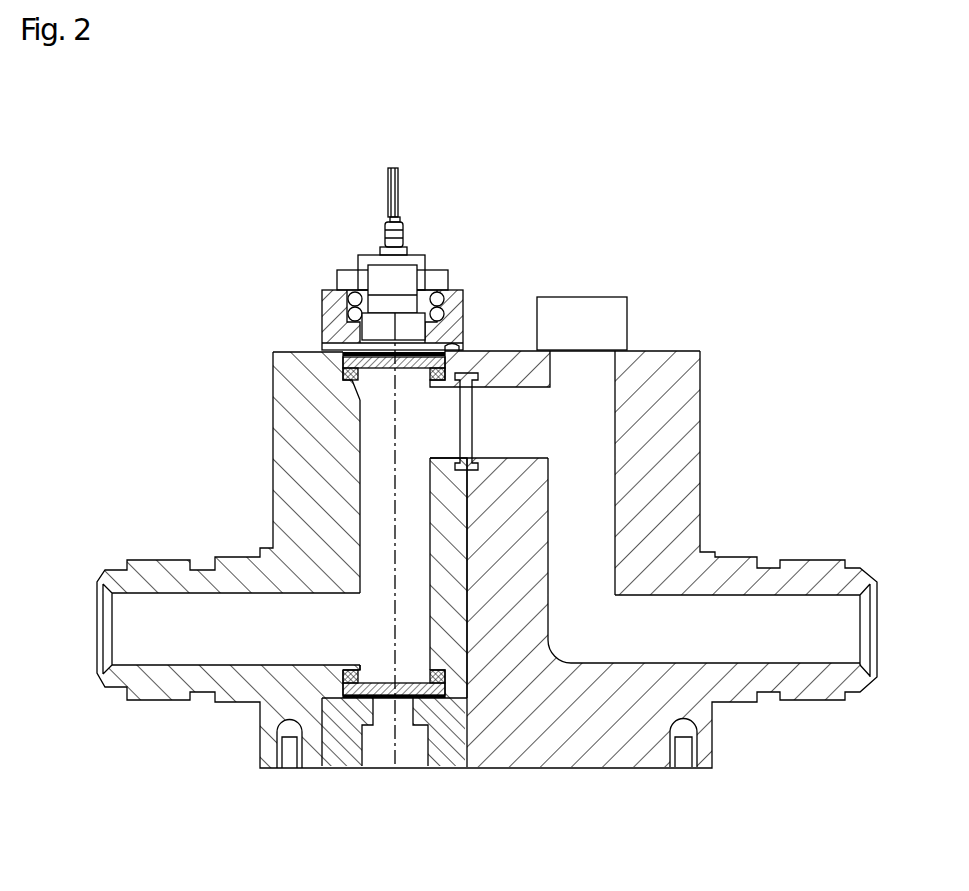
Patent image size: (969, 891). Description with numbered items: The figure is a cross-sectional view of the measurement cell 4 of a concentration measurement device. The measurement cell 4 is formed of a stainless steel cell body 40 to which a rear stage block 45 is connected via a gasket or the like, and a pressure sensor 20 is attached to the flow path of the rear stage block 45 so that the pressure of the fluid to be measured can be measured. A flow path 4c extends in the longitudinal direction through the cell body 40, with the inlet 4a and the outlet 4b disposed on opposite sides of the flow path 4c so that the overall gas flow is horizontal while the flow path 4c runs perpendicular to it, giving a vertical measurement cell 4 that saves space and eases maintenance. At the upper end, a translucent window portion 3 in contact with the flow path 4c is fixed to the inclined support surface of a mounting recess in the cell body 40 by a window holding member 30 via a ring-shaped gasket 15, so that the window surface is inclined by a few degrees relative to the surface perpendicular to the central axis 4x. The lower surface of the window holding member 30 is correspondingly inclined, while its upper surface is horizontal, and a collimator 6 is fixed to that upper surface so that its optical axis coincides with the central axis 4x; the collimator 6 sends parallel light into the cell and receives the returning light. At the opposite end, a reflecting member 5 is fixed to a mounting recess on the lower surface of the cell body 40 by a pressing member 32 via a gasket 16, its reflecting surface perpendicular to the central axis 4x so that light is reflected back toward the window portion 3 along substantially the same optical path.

The measurement cell 4 is at (172, 270).
The window portion 3 is at (300, 353).
The cell body 40 is at (300, 450).
The rear stage block 45 is at (682, 475).
The inlet 4a is at (357, 635).
The outlet 4b is at (435, 415).
The flow path 4c is at (380, 503).
The central axis 4x is at (393, 540).
The reflecting member 5 is at (435, 703).
The collimator 6 is at (395, 282).
The gasket 15 is at (350, 385).
The gasket 16 is at (465, 680).
The pressure sensor 20 is at (602, 317).
The window holding member 30 is at (328, 320).
The pressing member 32 is at (350, 740).